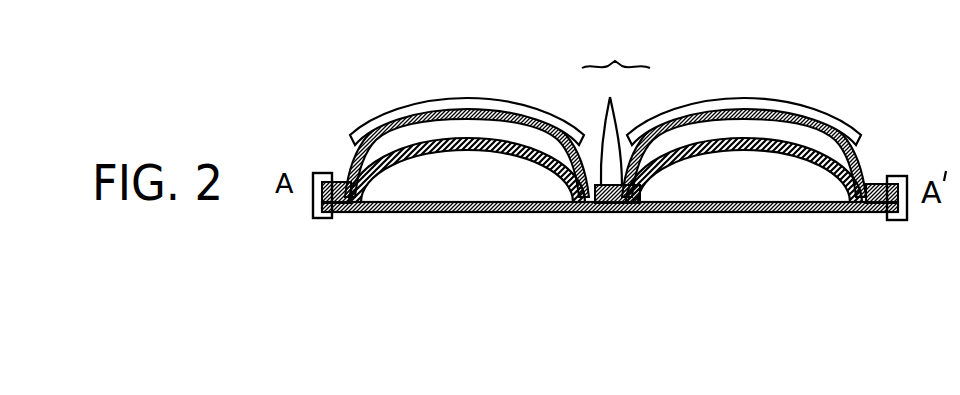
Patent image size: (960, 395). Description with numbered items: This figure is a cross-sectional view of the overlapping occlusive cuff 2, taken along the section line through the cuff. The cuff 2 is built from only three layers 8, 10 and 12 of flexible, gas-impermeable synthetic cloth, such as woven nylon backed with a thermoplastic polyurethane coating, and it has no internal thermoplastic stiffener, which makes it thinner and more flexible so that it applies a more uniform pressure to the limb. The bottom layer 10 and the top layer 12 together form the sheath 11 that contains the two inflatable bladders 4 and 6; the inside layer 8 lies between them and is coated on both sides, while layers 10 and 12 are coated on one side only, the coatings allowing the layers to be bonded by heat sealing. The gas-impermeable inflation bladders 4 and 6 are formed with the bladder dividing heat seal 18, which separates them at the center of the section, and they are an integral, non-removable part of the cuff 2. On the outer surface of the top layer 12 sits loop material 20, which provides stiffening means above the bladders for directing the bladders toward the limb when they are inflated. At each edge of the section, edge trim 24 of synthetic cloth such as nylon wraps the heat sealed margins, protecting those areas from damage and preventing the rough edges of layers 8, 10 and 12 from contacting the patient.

The cuff 2 is at (804, 218).
The inflatable bladder 4 is at (408, 178).
The inflatable bladder 6 is at (820, 188).
The inside layer 8 is at (480, 139).
The bottom layer 10 is at (694, 202).
The sheath 11 is at (616, 50).
The top layer 12 is at (610, 98).
The bladder dividing heat seal 18 is at (602, 209).
The loop material 20 is at (372, 119).
The edge trim 24 is at (313, 198).